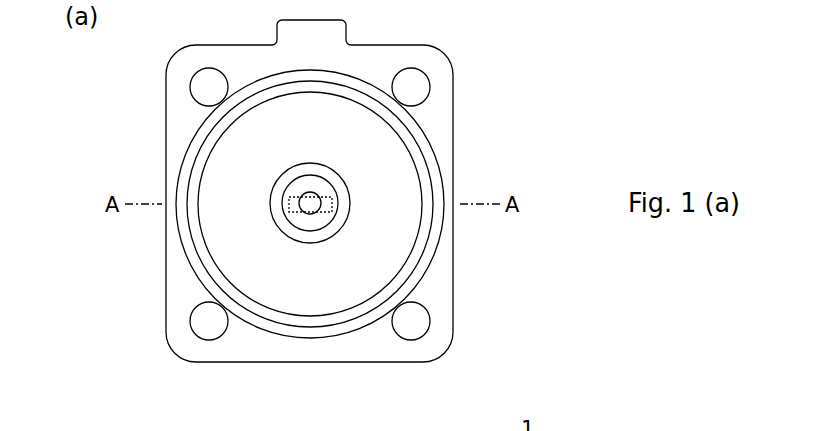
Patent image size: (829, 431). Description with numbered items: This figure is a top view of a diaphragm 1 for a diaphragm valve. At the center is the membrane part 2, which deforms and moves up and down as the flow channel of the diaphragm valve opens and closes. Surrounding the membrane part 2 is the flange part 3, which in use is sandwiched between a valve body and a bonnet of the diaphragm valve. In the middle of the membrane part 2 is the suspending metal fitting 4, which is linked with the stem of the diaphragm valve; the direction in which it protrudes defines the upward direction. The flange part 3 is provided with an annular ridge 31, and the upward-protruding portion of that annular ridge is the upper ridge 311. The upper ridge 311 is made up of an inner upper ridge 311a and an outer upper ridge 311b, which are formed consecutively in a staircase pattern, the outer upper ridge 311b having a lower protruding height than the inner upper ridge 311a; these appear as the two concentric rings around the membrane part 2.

The diaphragm 1 is at (540, 95).
The membrane part 2 is at (216, 247).
The flange part 3 is at (442, 296).
The suspending metal fitting 4 is at (311, 200).
The annular ridge 31 is at (155, 370).
The upper ridge 311 is at (248, 249).
The inner upper ridge 311a is at (253, 308).
The outer upper ridge 311b is at (278, 332).